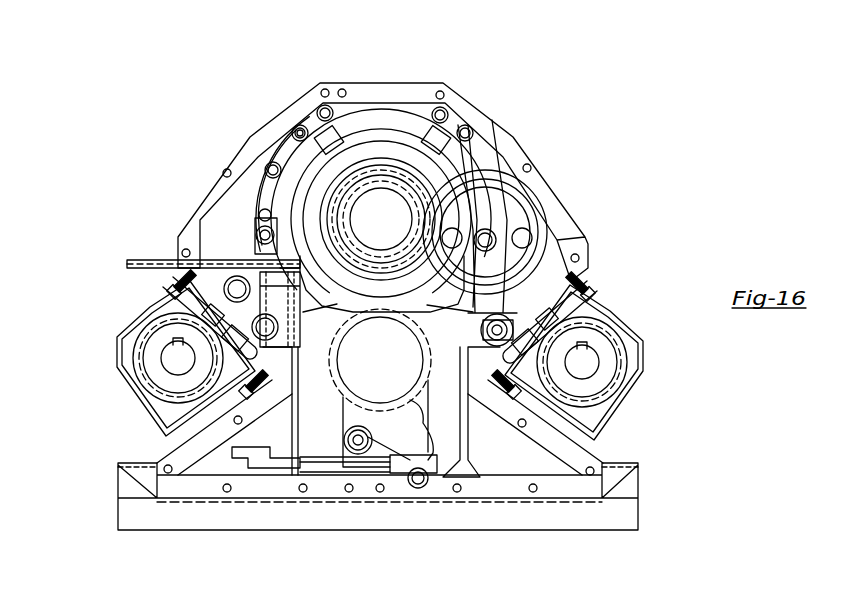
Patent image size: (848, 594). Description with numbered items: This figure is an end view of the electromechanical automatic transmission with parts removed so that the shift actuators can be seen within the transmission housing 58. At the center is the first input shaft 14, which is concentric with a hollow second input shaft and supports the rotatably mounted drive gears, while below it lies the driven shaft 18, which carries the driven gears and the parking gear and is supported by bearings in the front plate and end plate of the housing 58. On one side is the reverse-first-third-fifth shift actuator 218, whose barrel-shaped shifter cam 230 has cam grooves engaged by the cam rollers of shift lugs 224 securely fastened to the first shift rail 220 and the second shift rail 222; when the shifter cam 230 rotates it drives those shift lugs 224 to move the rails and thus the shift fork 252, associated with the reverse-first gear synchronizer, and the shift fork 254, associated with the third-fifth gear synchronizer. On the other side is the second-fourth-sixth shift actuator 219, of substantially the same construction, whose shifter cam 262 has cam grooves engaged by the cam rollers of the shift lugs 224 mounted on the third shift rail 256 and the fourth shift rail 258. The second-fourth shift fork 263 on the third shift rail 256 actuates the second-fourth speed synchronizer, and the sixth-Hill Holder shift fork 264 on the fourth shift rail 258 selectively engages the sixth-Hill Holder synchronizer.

The first input shaft 14 is at (380, 200).
The driven shaft 18 is at (370, 375).
The transmission housing 58 is at (513, 143).
The R-1-3-5 shift actuator 218 is at (619, 362).
The 2-4-6 shift actuator 219 is at (138, 357).
The first shift rail 220 is at (560, 387).
The second shift rail 222 is at (583, 238).
The shift lug 224 is at (197, 282).
The shifter cam 230 is at (560, 345).
The shift fork 252 is at (503, 213).
The shift fork 254 is at (465, 128).
The third shift rail 256 is at (215, 377).
The fourth shift rail 258 is at (228, 320).
The shifter cam 262 is at (160, 343).
The 2-4 shift fork 263 is at (301, 120).
The sixth-Hill Holder shift fork 264 is at (293, 165).